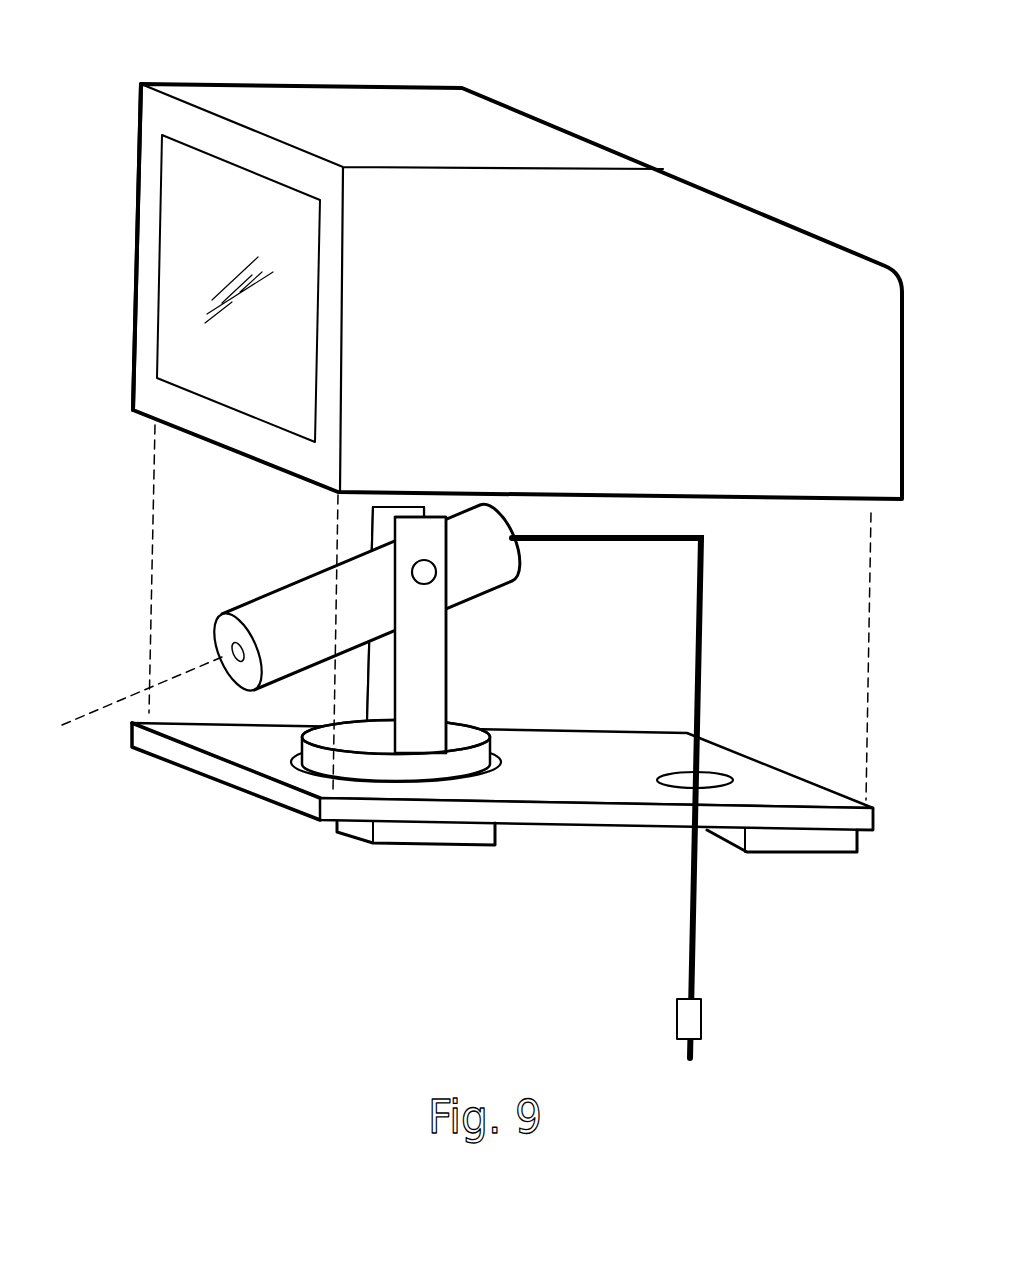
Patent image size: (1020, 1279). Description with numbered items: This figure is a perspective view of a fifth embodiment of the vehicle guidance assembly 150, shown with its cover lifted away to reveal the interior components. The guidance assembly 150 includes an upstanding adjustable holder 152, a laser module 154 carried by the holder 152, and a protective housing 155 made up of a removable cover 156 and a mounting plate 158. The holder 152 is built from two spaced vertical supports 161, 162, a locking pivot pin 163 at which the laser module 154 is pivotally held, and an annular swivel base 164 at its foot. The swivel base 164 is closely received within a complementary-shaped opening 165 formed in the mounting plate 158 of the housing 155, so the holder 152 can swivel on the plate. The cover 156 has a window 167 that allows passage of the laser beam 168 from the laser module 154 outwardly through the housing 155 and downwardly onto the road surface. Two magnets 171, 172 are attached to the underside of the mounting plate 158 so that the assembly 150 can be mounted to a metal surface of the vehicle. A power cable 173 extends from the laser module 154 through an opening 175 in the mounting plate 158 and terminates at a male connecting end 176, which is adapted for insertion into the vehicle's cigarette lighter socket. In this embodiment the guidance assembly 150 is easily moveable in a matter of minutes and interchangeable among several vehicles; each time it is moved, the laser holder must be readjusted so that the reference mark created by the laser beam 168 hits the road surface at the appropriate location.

The guidance assembly 150 is at (873, 862).
The adjustable holder 152 is at (460, 618).
The laser module 154 is at (317, 565).
The protective housing 155 is at (123, 283).
The removable cover 156 is at (480, 145).
The mounting plate 158 is at (345, 790).
The vertical support 161 is at (427, 710).
The vertical support 162 is at (378, 520).
The locking pivot pin 163 is at (433, 562).
The annular swivel base 164 is at (300, 737).
The opening 165 is at (333, 768).
The window 167 is at (235, 200).
The laser beam 168 is at (178, 673).
The magnet 171 is at (807, 852).
The magnet 172 is at (435, 845).
The power cable 173 is at (703, 645).
The opening 175 is at (720, 773).
The male connecting end 176 is at (702, 1028).